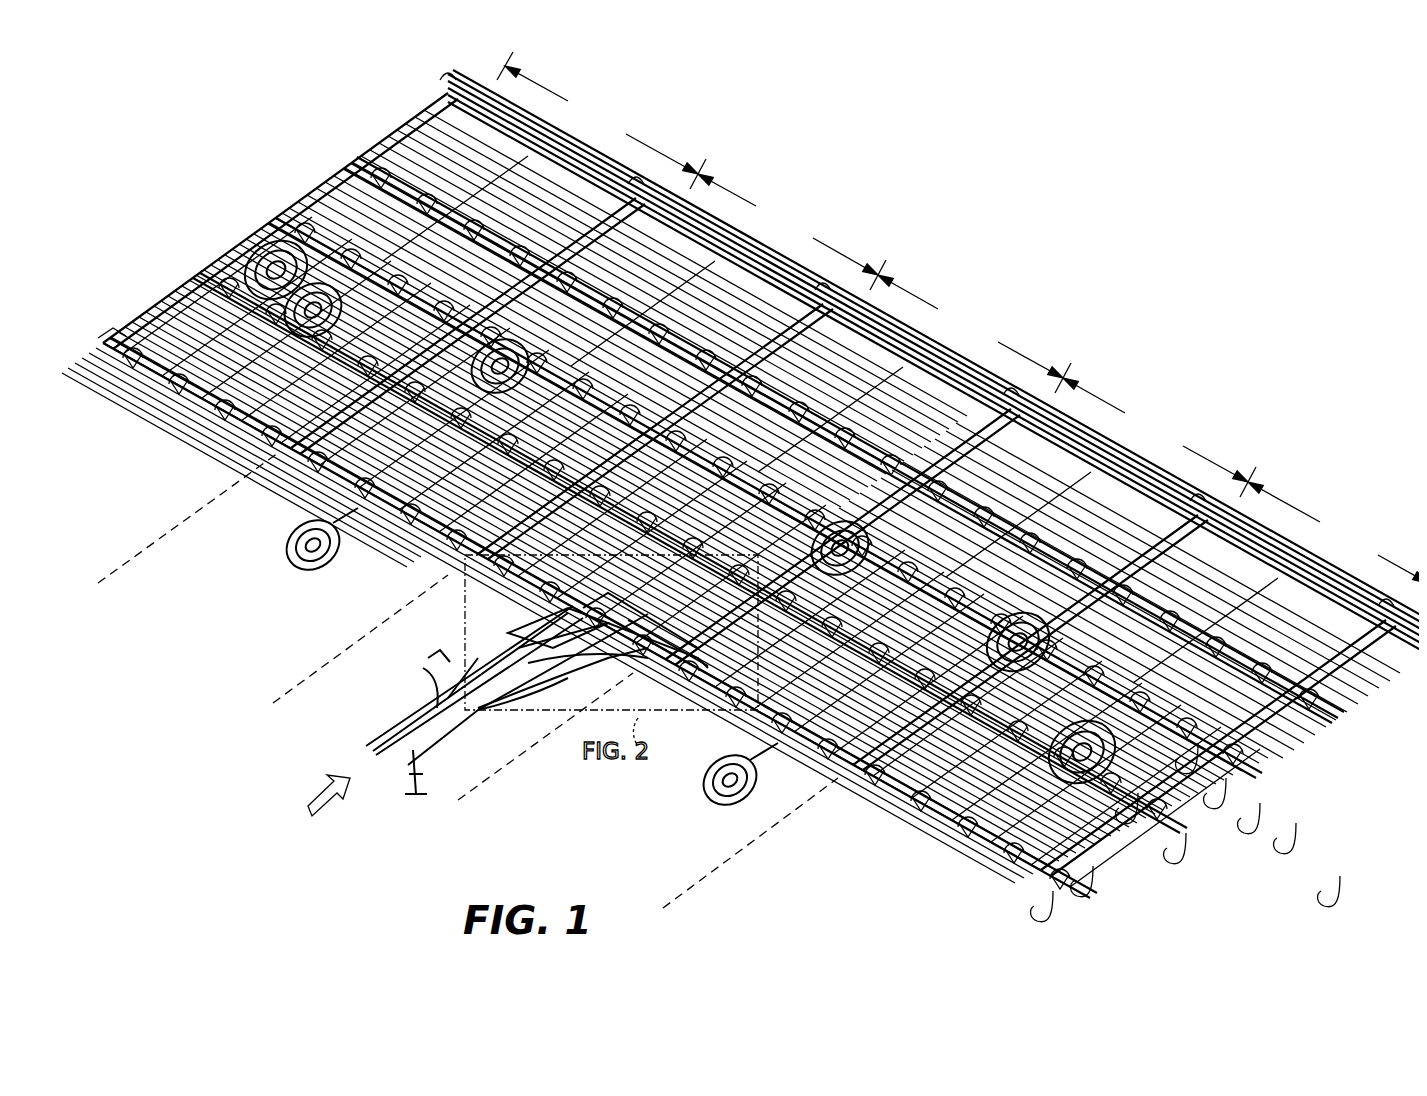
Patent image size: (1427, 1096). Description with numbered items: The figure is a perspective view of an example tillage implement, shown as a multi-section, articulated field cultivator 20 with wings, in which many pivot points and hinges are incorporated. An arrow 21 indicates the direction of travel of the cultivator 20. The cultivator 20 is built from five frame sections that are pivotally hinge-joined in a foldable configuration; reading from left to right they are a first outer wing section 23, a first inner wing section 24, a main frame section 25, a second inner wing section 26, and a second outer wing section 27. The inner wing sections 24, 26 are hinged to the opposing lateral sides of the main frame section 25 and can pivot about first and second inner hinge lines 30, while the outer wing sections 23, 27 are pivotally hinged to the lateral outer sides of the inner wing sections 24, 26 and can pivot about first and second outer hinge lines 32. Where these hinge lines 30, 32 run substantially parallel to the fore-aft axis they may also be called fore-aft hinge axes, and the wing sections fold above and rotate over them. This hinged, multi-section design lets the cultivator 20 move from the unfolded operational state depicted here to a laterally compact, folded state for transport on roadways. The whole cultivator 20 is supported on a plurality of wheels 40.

The field cultivator 20 is at (237, 156).
The arrow 21 is at (316, 788).
The first outer wing section 23 is at (601, 120).
The first inner wing section 24 is at (791, 230).
The main frame section 25 is at (973, 332).
The second inner wing section 26 is at (1158, 435).
The second outer wing section 27 is at (1332, 532).
The inner hinge lines 30 is at (290, 660).
The outer hinge lines 32 is at (147, 520).
The wheels 40 is at (298, 565).